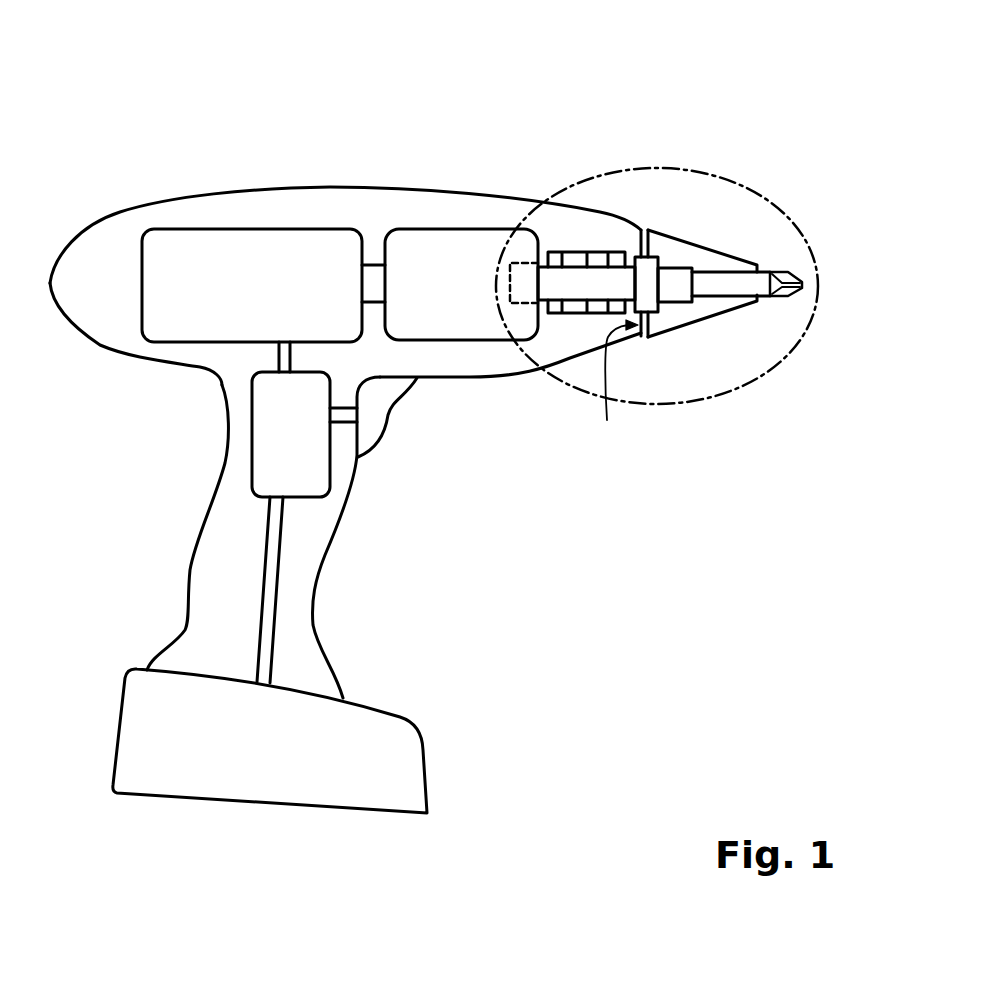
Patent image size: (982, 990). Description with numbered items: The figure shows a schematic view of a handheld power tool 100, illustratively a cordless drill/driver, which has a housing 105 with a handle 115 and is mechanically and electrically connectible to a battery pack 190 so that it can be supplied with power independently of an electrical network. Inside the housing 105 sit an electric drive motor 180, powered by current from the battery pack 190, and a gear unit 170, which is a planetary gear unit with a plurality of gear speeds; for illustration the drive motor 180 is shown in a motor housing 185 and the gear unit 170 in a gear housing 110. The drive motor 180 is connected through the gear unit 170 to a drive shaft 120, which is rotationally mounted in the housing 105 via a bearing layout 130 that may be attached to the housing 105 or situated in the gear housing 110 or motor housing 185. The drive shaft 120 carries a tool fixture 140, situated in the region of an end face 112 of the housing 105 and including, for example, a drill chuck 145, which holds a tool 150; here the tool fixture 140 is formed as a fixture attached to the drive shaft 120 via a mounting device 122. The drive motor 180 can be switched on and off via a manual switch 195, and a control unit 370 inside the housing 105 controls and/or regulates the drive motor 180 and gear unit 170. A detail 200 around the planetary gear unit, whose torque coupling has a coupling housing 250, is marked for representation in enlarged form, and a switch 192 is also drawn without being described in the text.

The handheld power tool 100 is at (760, 103).
The housing 105 is at (95, 257).
The gear housing 110 is at (458, 231).
The end face 112 is at (609, 384).
The handle 115 is at (208, 558).
The drive shaft 120 is at (558, 280).
The mounting device 122 is at (676, 316).
The bearing layout 130 is at (594, 250).
The tool fixture 140 is at (730, 302).
The drill chuck 145 is at (749, 298).
The tool 150 is at (770, 276).
The gear unit 170 is at (413, 238).
The drive motor 180 is at (190, 238).
The motor housing 185 is at (250, 228).
The battery pack 190 is at (135, 728).
The switch 192 is at (340, 418).
The manual switch 195 is at (370, 427).
The detail 200 is at (658, 167).
The coupling housing 250 is at (525, 275).
The control unit 370 is at (262, 448).